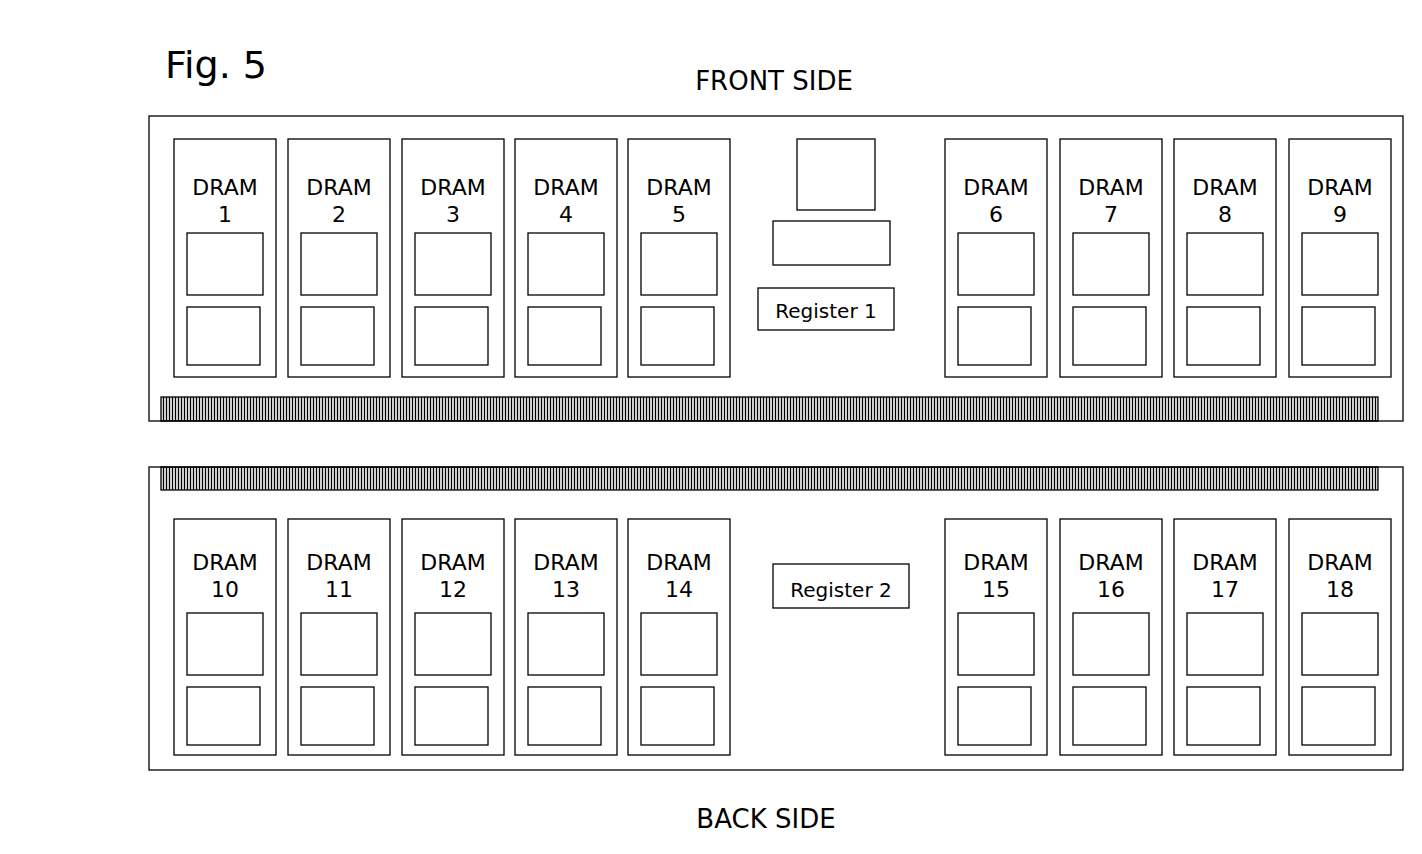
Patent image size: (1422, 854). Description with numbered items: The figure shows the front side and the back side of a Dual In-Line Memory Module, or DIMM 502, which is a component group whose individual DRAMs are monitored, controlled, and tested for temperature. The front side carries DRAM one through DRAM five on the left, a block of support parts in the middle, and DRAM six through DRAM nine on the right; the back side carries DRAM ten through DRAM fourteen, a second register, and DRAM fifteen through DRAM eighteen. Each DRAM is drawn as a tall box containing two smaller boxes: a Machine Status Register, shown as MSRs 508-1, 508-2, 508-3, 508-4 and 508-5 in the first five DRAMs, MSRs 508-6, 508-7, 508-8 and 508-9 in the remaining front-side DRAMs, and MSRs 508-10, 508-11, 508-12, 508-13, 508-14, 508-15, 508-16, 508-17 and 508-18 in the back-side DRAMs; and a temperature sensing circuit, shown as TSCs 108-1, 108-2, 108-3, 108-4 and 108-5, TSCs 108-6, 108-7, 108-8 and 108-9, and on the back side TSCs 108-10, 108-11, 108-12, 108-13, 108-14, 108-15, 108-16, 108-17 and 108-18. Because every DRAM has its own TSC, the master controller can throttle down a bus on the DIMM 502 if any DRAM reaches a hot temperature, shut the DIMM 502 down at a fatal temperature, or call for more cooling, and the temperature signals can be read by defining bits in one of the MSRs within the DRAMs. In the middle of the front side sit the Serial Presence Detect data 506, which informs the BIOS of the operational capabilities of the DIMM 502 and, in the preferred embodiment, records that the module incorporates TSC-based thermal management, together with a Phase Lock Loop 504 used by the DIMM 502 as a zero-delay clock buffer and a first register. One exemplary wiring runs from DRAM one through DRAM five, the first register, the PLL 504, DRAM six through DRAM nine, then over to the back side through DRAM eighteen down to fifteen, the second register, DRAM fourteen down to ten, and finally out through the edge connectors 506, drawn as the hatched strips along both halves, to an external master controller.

The Dual In-Line Memory Module (DIMM) 502 is at (500, 789).
The Phase Lock Loop (PLL) 504 is at (832, 255).
The Serial Presence Detect (SPD) data 506 is at (817, 200).
The Machine Status Register (MSR) 508-1 is at (199, 287).
The Machine Status Register (MSR) 508-2 is at (313, 287).
The Machine Status Register (MSR) 508-3 is at (427, 287).
The Machine Status Register (MSR) 508-4 is at (540, 287).
The Machine Status Register (MSR) 508-5 is at (653, 287).
The Machine Status Register (MSR) 508-6 is at (970, 287).
The Machine Status Register (MSR) 508-7 is at (1085, 287).
The Machine Status Register (MSR) 508-8 is at (1199, 287).
The Machine Status Register (MSR) 508-9 is at (1314, 287).
The Machine Status Register (MSR) 508-10 is at (193, 667).
The Machine Status Register (MSR) 508-11 is at (307, 667).
The Machine Status Register (MSR) 508-12 is at (421, 667).
The Machine Status Register (MSR) 508-13 is at (534, 667).
The Machine Status Register (MSR) 508-14 is at (647, 667).
The Machine Status Register (MSR) 508-15 is at (964, 667).
The Machine Status Register (MSR) 508-16 is at (1079, 667).
The Machine Status Register (MSR) 508-17 is at (1193, 667).
The Machine Status Register (MSR) 508-18 is at (1308, 667).
The TSC 108-1 is at (199, 359).
The TSC 108-2 is at (313, 359).
The TSC 108-3 is at (427, 359).
The TSC 108-4 is at (540, 359).
The TSC 108-5 is at (653, 359).
The TSC 108-6 is at (970, 359).
The TSC 108-7 is at (1085, 359).
The TSC 108-8 is at (1199, 359).
The TSC 108-9 is at (1314, 359).
The TSC 108-10 is at (193, 739).
The TSC 108-11 is at (307, 739).
The TSC 108-12 is at (421, 739).
The TSC 108-13 is at (534, 739).
The TSC 108-14 is at (647, 739).
The TSC 108-15 is at (964, 739).
The TSC 108-16 is at (1079, 739).
The TSC 108-17 is at (1193, 739).
The TSC 108-18 is at (1308, 739).